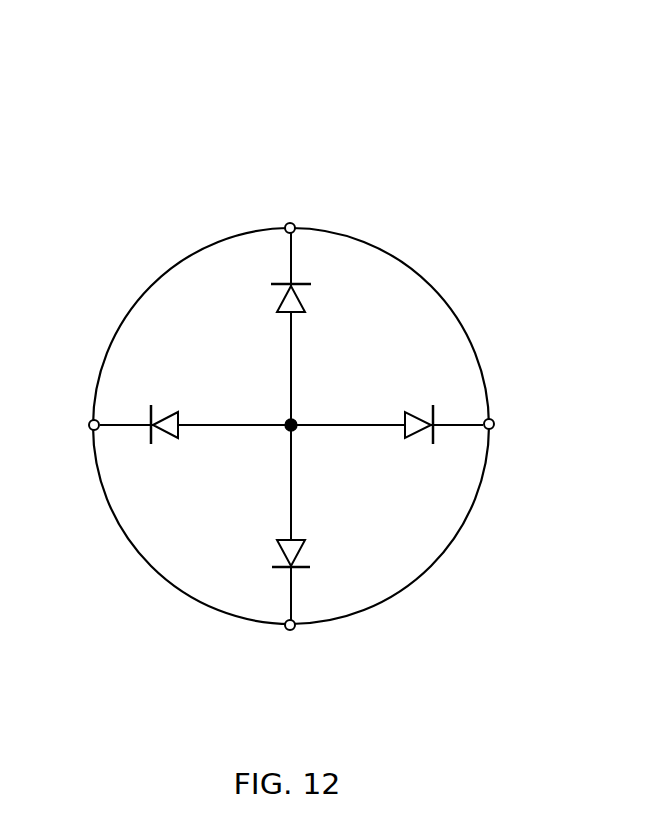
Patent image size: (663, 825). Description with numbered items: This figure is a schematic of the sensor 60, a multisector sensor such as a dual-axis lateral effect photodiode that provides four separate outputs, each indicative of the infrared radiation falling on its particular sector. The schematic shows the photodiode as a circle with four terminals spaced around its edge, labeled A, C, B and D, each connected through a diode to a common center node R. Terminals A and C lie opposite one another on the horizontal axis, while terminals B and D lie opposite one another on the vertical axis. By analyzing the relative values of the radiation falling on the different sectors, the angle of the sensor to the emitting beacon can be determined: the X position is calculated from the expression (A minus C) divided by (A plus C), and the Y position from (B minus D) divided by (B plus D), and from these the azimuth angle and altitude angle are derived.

The sensor 60 is at (478, 62).
The sector output A is at (88, 425).
The sector output B is at (292, 221).
The sector output C is at (496, 422).
The sector output D is at (288, 632).
The center node R is at (295, 420).